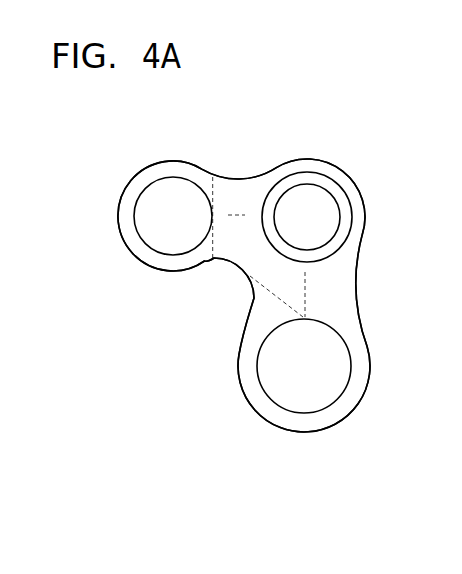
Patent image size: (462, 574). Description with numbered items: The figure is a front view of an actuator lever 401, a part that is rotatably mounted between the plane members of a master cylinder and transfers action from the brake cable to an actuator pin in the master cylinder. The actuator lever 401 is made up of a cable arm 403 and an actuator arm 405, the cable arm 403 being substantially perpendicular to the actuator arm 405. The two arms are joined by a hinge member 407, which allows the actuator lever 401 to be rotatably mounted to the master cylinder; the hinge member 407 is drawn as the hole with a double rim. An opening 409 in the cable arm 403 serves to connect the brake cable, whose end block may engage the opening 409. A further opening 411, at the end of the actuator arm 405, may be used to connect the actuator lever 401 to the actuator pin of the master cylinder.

The actuator lever 401 is at (222, 454).
The cable arm 403 is at (228, 197).
The actuator arm 405 is at (333, 283).
The hinge member 407 is at (312, 197).
The opening 409 is at (152, 226).
The opening 411 is at (313, 384).